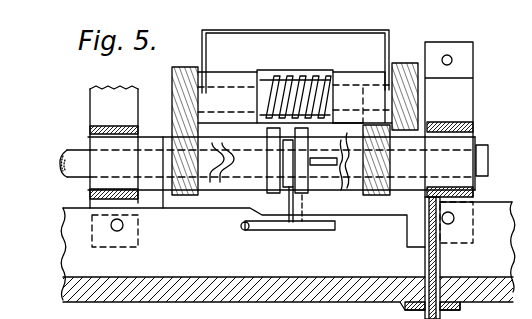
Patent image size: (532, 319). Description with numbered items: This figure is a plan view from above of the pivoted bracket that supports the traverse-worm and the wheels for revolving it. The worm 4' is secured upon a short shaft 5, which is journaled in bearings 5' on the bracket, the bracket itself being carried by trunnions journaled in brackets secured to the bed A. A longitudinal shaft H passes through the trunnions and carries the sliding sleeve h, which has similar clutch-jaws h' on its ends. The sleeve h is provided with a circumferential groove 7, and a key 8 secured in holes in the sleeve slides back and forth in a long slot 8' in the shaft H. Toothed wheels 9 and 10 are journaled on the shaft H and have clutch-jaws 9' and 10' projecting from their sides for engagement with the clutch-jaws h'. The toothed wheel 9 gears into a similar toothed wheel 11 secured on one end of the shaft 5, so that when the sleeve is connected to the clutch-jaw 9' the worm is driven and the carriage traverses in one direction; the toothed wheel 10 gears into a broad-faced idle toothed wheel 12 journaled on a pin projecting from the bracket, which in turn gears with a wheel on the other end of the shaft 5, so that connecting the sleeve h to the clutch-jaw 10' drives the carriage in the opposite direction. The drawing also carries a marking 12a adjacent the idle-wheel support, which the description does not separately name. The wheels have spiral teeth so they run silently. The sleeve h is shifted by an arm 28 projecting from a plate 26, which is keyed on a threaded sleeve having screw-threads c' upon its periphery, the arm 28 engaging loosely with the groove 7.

The bed A is at (309, 296).
The screw-threads c' is at (409, 258).
The toothed wheel 9 is at (280, 144).
The clutch-jaw 9' is at (275, 188).
The longitudinal shaft H is at (62, 195).
The toothed wheel 11 is at (172, 84).
The toothed wheel 10 is at (390, 159).
The clutch-jaw 10' is at (357, 191).
The bearings 5' is at (295, 76).
The worm 4' is at (295, 86).
The short shaft 5 is at (347, 71).
The idle toothed wheel 12 is at (428, 120).
The post opening 12a is at (419, 82).
The sliding sleeve h is at (279, 160).
The clutch-jaws h' is at (283, 188).
The circumferential groove 7 is at (291, 196).
The plate 26 is at (272, 231).
The arm 28 is at (323, 156).
The key 8 is at (322, 210).
The long slot 8' is at (303, 220).